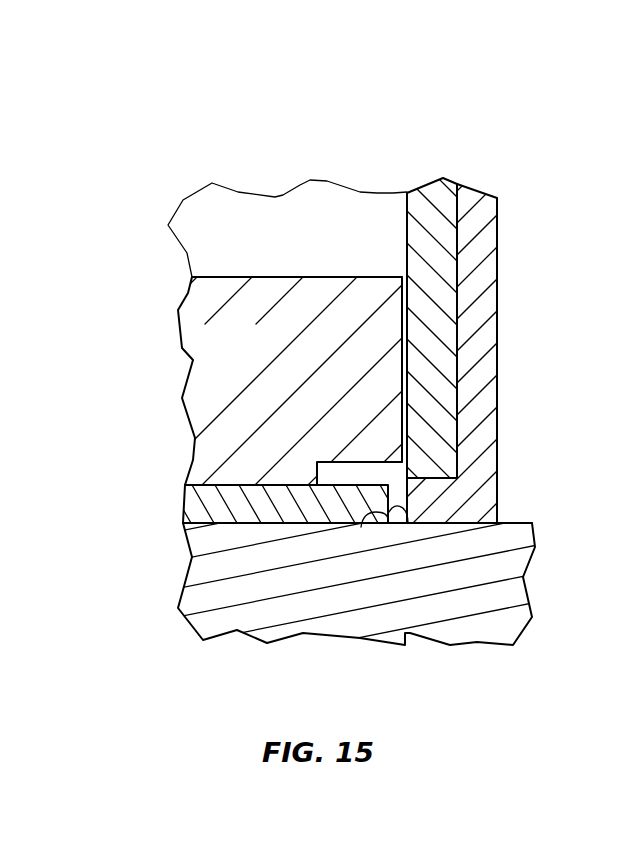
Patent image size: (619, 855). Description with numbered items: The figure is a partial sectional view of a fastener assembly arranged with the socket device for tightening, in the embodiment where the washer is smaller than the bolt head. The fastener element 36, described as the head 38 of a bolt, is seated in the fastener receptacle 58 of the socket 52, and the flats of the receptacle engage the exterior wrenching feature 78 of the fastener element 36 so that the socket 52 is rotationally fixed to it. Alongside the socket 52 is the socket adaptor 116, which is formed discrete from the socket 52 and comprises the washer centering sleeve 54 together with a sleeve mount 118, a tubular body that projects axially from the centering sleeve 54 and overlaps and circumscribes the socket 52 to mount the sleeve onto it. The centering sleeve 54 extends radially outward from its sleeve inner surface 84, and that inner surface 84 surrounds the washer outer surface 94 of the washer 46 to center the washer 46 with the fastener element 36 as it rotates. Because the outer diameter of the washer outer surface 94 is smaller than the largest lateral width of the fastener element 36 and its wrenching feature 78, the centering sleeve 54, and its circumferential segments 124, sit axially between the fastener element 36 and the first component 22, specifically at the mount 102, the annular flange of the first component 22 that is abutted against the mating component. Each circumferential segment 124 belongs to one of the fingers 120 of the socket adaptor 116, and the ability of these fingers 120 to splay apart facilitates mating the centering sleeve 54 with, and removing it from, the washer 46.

The fastener receptacle 58 is at (292, 208).
The fastener element 36 is at (334, 323).
The head 38 is at (166, 372).
The washer 46 is at (166, 510).
The socket 52 is at (429, 167).
The washer centering sleeve 54 is at (518, 503).
The first component 22 is at (286, 567).
The mount 102 is at (161, 608).
The sleeve inner surface 84 is at (361, 527).
The washer outer surface 94 is at (408, 523).
The fingers 120 is at (357, 566).
The circumferential segment 124 is at (443, 525).
The wrenching feature 78 is at (414, 311).
The socket adaptor 116 is at (510, 141).
The sleeve mount 118 is at (514, 215).